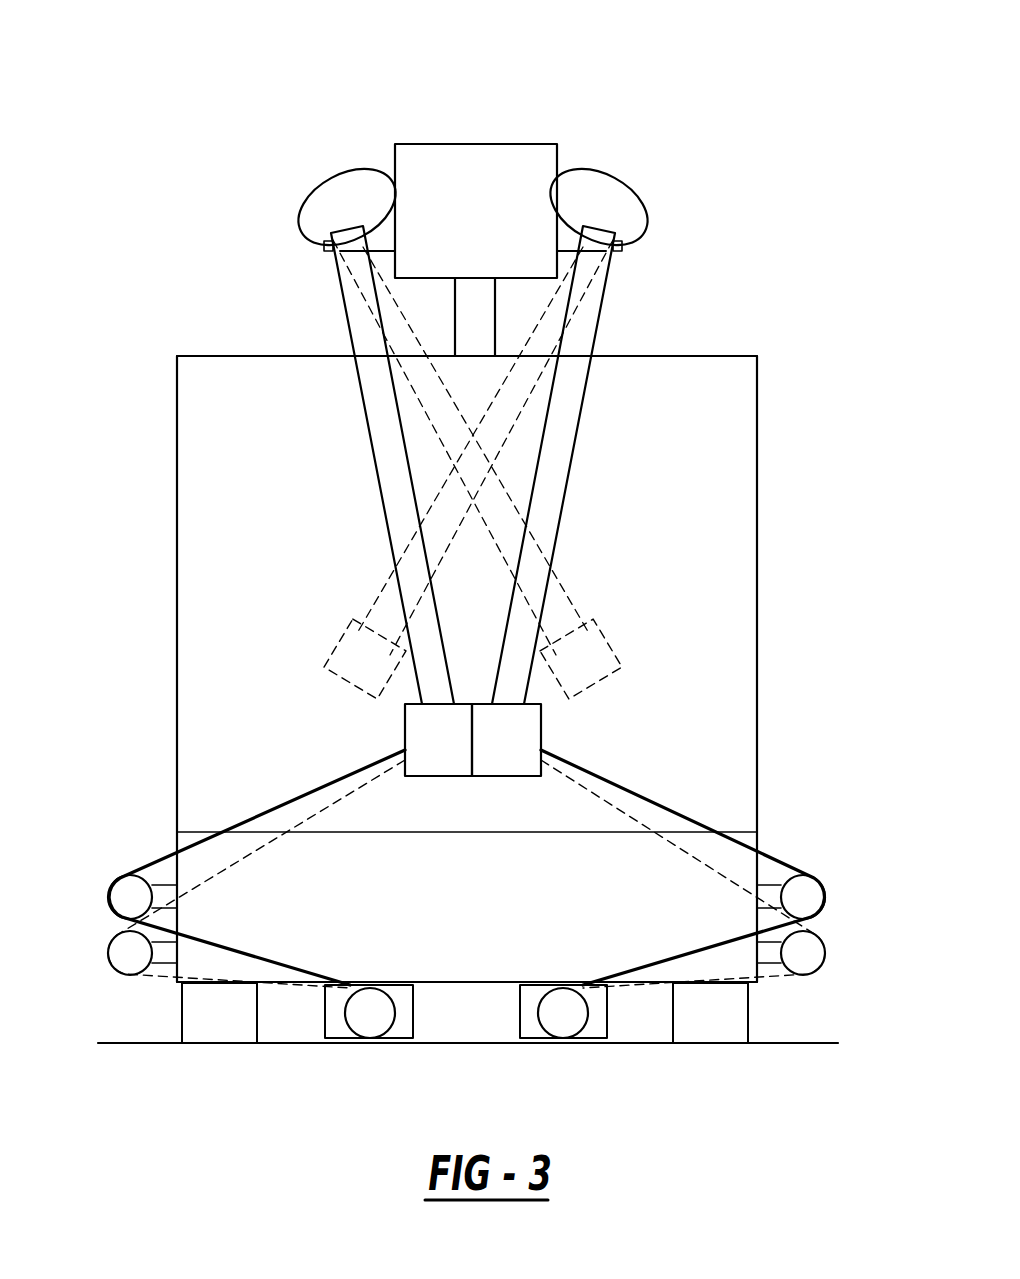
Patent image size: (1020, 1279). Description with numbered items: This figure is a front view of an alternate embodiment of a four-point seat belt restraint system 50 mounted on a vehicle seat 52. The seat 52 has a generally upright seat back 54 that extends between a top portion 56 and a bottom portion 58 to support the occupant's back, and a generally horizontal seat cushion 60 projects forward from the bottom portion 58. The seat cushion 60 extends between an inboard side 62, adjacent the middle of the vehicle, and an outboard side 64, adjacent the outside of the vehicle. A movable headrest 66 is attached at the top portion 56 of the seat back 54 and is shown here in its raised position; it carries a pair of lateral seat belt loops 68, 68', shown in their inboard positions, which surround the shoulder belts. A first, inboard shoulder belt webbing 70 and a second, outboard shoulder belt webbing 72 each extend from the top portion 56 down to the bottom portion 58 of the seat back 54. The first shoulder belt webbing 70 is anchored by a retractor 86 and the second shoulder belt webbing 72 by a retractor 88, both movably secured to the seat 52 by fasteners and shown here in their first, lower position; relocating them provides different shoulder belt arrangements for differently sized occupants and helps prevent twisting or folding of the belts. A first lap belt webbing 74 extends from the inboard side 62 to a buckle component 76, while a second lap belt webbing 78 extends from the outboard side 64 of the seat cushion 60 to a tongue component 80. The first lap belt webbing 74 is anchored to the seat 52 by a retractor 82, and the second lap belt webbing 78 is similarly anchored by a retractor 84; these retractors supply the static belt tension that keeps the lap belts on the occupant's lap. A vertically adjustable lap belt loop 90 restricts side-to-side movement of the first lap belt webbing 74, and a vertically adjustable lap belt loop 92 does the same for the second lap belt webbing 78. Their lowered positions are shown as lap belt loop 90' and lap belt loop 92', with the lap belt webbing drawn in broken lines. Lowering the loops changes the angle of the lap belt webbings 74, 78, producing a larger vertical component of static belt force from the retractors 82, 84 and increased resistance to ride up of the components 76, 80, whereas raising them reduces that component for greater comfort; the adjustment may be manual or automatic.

The four-point seat belt restraint system 50 is at (212, 246).
The seat 52 is at (210, 418).
The seat back 54 is at (746, 458).
The top portion 56 is at (694, 369).
The bottom portion 58 is at (745, 810).
The seat cushion 60 is at (493, 940).
The inboard side 62 is at (205, 962).
The outboard side 64 is at (723, 972).
The headrest 66 is at (476, 160).
The lateral seat belt loop 68 is at (321, 142).
The lateral seat belt loop 68' is at (601, 160).
The first shoulder belt webbing 70 is at (360, 320).
The second shoulder belt webbing 72 is at (564, 423).
The first lap belt webbing 74 is at (283, 803).
The buckle component 76 is at (405, 727).
The second lap belt webbing 78 is at (680, 812).
The tongue component 80 is at (541, 733).
The retractor 82 is at (365, 1020).
The retractor 84 is at (563, 1020).
The retractor 86 is at (580, 652).
The retractor 88 is at (358, 658).
The vertically adjustable lap belt loop 90 is at (104, 871).
The vertically adjustable lap belt loop 90' is at (104, 977).
The vertically adjustable lap belt loop 92 is at (830, 900).
The vertically adjustable lap belt loop 92' is at (831, 957).